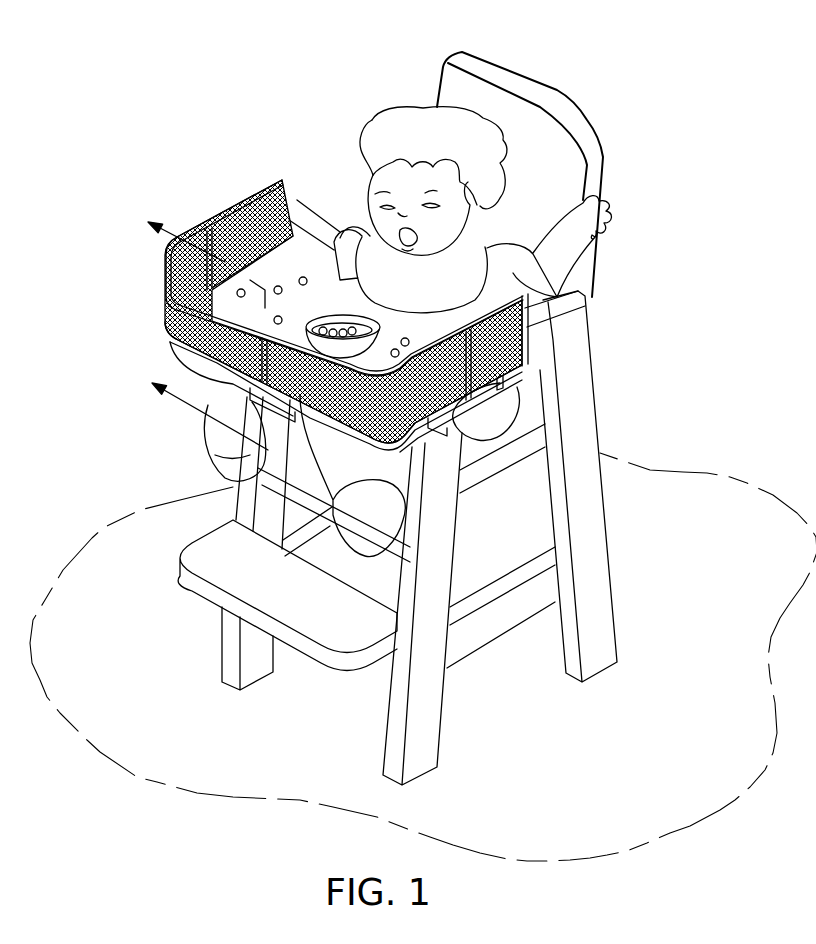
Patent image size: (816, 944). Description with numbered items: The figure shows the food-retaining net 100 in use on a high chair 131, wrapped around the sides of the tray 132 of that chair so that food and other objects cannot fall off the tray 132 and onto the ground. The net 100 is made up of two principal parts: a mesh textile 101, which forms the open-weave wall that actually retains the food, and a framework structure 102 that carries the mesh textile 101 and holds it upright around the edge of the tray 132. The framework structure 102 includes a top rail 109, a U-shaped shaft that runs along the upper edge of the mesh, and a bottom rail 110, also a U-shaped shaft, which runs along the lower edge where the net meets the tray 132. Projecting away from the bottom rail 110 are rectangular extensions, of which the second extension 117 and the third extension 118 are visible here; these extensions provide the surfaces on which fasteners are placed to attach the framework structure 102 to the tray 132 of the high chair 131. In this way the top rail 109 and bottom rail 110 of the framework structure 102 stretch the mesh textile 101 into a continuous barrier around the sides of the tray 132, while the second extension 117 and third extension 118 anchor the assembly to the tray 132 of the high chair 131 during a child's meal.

The food-retaining net 100 is at (112, 79).
The mesh textile 101 is at (250, 230).
The framework structure 102 is at (530, 352).
The top rail 109 is at (212, 226).
The bottom rail 110 is at (428, 430).
The second extension 117 is at (240, 383).
The third extension 118 is at (490, 395).
The high chair 131 is at (556, 100).
The tray 132 is at (304, 279).